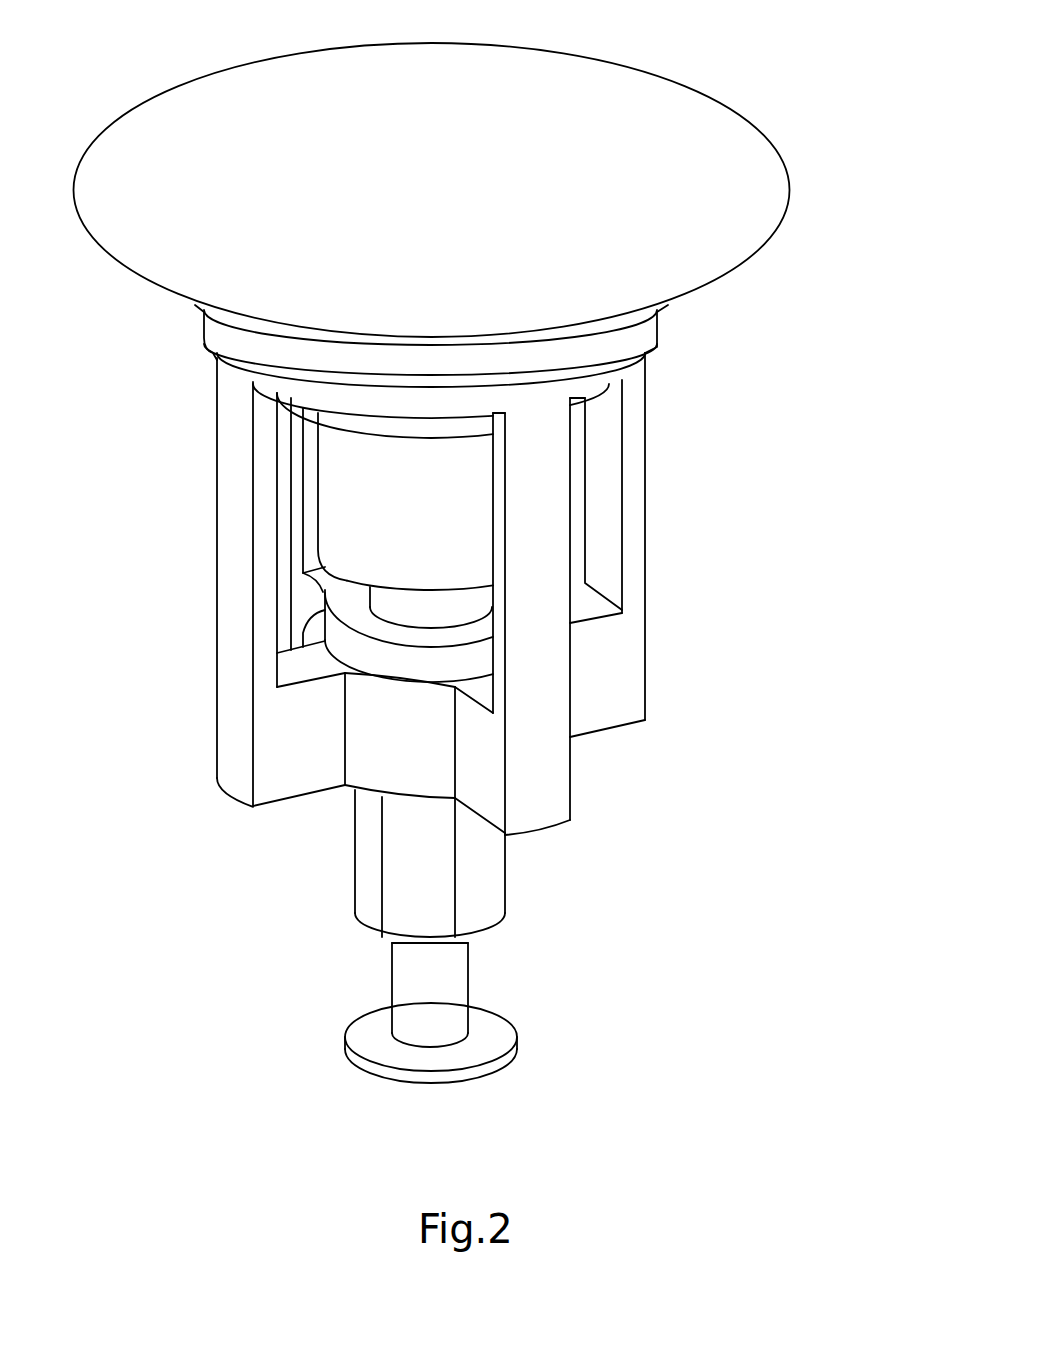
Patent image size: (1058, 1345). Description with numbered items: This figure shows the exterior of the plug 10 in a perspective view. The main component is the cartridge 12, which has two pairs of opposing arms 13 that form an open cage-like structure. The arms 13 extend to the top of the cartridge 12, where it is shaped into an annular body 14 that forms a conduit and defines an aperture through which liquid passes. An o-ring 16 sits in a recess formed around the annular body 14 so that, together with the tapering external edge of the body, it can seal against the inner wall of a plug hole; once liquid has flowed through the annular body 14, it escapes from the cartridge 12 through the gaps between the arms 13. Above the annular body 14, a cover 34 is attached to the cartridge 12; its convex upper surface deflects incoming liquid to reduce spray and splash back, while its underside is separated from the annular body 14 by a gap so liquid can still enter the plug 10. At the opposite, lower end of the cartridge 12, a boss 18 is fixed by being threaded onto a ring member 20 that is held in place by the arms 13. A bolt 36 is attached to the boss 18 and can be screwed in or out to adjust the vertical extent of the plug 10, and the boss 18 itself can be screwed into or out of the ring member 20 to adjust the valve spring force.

The plug 10 is at (772, 324).
The cartridge 12 is at (628, 552).
The arms 13 is at (243, 617).
The annular body 14 is at (600, 370).
The o-ring 16 is at (620, 332).
The boss 18 is at (497, 868).
The ring member 20 is at (383, 753).
The cover 34 is at (650, 157).
The bolt 36 is at (452, 978).